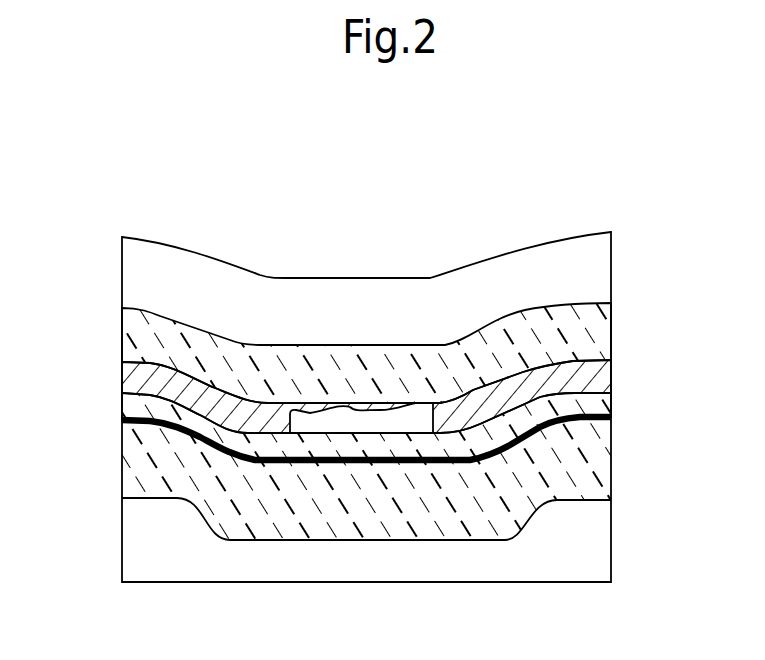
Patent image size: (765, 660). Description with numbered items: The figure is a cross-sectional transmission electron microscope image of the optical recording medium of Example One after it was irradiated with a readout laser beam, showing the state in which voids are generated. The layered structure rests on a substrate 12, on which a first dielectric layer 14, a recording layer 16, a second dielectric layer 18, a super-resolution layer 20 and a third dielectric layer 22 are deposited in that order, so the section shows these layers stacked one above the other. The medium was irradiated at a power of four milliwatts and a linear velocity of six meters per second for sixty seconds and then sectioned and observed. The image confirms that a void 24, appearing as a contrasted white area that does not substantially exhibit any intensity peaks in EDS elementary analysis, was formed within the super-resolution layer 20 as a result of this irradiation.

The substrate 12 is at (595, 547).
The first dielectric layer 14 is at (597, 477).
The recording layer 16 is at (612, 421).
The second dielectric layer 18 is at (128, 412).
The super-resolution layer 20 is at (598, 377).
The third dielectric layer 22 is at (600, 343).
The void 24 is at (358, 420).